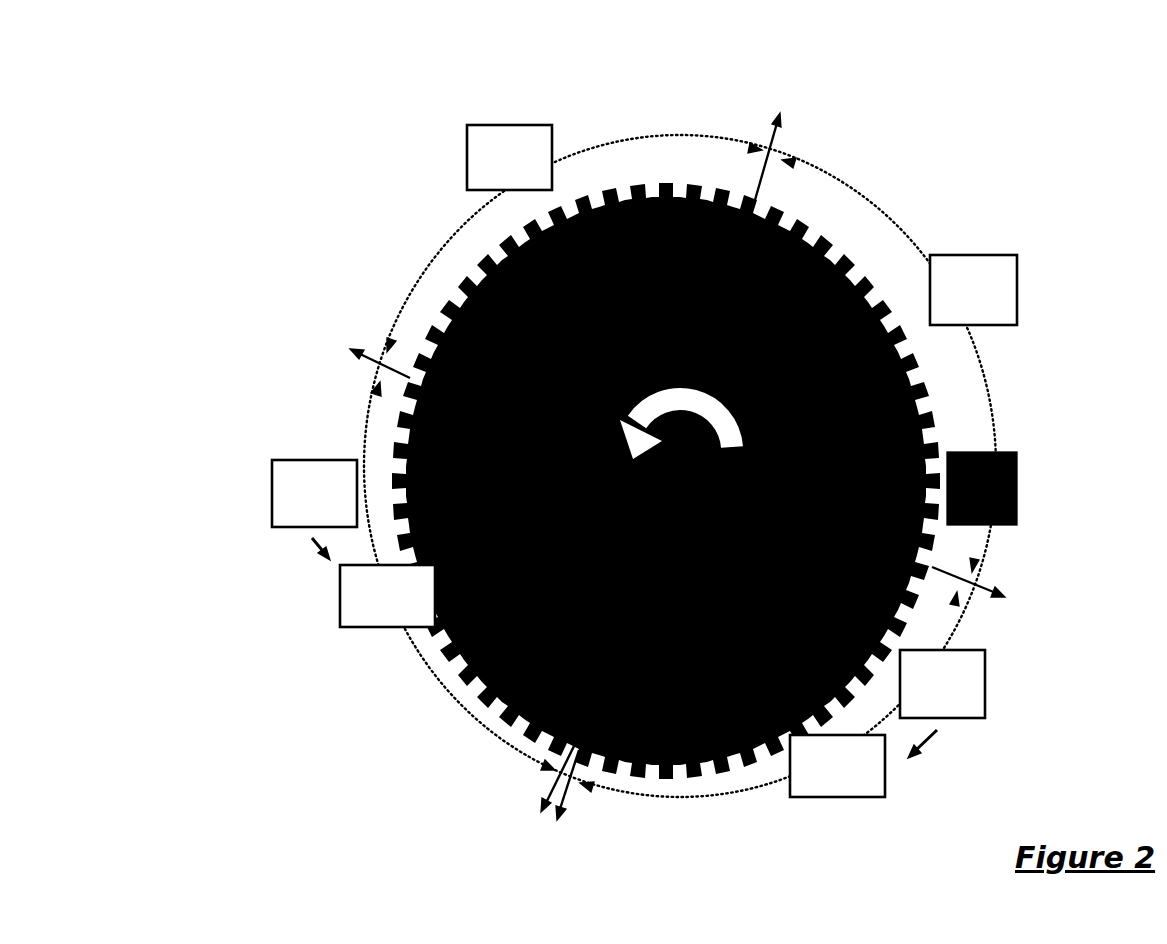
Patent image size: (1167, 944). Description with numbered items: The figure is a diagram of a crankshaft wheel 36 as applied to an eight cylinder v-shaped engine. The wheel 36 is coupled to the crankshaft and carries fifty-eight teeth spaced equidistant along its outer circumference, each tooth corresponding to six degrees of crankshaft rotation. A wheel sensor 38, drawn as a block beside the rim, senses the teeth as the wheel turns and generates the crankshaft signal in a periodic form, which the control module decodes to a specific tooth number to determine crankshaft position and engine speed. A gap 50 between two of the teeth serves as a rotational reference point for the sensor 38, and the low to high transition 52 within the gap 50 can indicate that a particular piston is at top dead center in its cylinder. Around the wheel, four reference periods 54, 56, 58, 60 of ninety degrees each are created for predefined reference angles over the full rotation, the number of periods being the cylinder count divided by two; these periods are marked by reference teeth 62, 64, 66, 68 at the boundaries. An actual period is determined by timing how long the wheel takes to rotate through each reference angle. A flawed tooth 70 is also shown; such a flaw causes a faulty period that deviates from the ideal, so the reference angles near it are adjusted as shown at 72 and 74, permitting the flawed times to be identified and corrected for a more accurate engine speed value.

The wheel 36 is at (684, 96).
The wheel sensor 38 is at (1020, 488).
The gap 50 is at (910, 337).
The low to high transition 52 is at (920, 382).
The reference period 54 is at (1017, 290).
The reference period 56 is at (986, 688).
The reference period 58 is at (270, 491).
The reference period 60 is at (498, 125).
The reference tooth 62 is at (748, 196).
The reference tooth 64 is at (928, 566).
The reference tooth 66 is at (585, 772).
The reference tooth 68 is at (410, 378).
The flawed tooth 70 is at (553, 762).
The adjusted reference angle 72 is at (862, 798).
The adjusted reference angle 74 is at (340, 605).